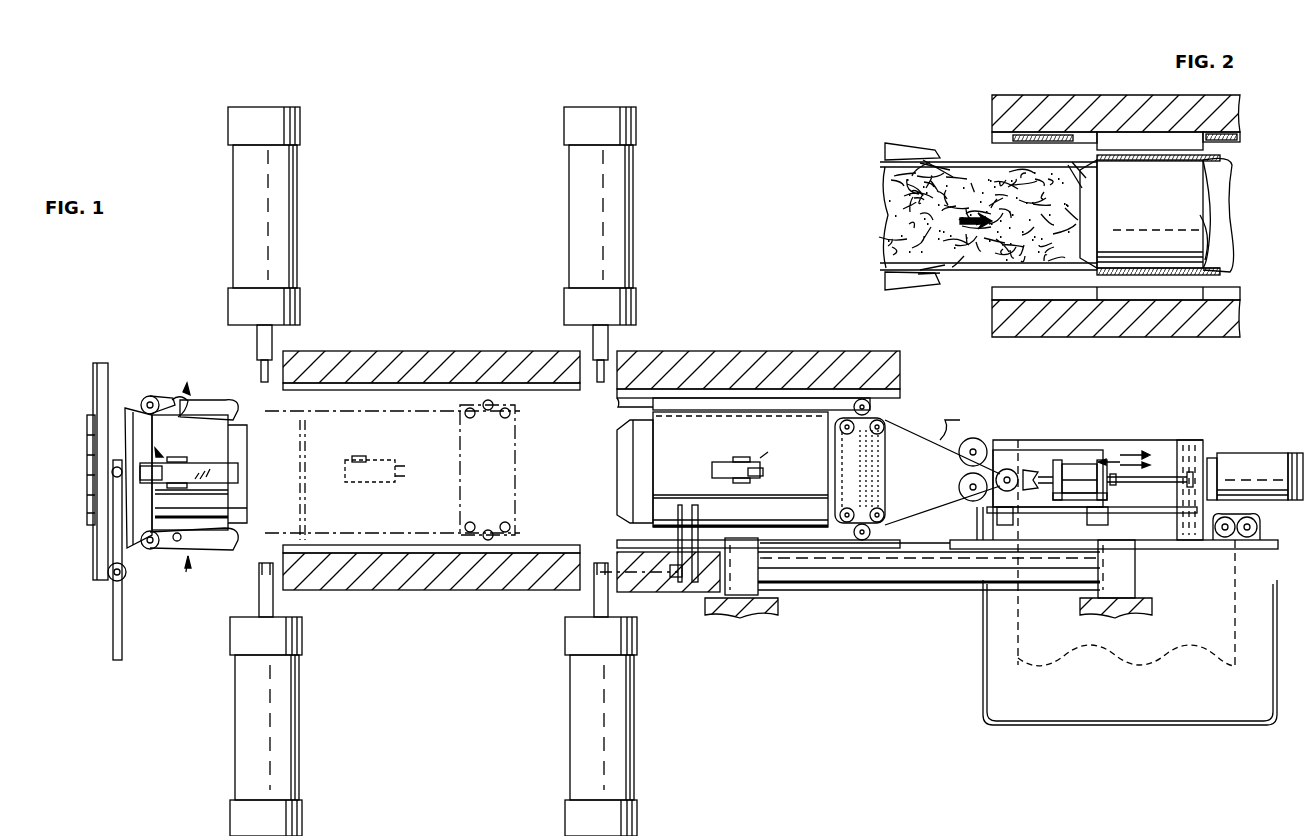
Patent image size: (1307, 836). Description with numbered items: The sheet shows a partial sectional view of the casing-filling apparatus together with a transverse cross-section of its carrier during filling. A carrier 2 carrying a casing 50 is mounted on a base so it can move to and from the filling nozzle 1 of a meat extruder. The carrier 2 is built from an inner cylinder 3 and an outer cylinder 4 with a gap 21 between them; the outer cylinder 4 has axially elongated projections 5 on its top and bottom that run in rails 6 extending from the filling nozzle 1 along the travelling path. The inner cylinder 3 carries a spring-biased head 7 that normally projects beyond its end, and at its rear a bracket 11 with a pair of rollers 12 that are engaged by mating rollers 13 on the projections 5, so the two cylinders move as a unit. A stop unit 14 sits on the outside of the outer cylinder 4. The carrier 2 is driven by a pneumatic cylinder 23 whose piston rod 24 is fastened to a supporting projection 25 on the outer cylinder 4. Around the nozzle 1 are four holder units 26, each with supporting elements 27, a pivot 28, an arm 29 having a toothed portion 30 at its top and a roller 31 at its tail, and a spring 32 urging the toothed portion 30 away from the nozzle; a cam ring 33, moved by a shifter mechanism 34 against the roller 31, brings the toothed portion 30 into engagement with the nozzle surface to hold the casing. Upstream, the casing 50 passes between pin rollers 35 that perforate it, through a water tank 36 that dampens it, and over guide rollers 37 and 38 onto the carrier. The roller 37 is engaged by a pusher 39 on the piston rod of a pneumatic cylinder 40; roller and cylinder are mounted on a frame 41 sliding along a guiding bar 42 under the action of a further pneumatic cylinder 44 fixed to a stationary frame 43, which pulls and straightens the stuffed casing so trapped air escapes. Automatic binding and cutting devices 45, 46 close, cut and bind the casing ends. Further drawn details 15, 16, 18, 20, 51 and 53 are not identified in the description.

In FIG. 1, the filling nozzle 1 is at (250, 490).
In FIG. 2, the filling nozzle 1 is at (895, 170).
In FIG. 1, the carrier 2 is at (245, 550).
In FIG. 2, the carrier 2 is at (1150, 214).
In FIG. 2, the inner cylinder 3 is at (1200, 207).
In FIG. 1, the outer cylinder 4 is at (822, 457).
In FIG. 2, the outer cylinder 4 is at (1240, 137).
In FIG. 1, the axially elongated projections 5 is at (775, 388).
In FIG. 2, the axially elongated projections 5 is at (1130, 138).
In FIG. 1, the rails 6 is at (448, 345).
In FIG. 2, the rails 6 is at (1027, 104).
In FIG. 1, the head 7 is at (625, 457).
In FIG. 2, the head 7 is at (1085, 180).
In FIG. 1, the bracket 11 is at (878, 462).
In FIG. 1, the rollers 12 is at (840, 427).
In FIG. 1, the mating rollers 13 is at (870, 408).
In FIG. 1, the stop unit 14 is at (758, 458).
In FIG. 1, the cap 15 is at (741, 457).
In FIG. 1, the clamp body 16 is at (720, 470).
In FIG. 1, the jaw 18 is at (765, 470).
In FIG. 1, the lower cap 20 is at (718, 478).
In FIG. 2, the gap 21 is at (1220, 276).
In FIG. 1, the pneumatic cylinder 23 is at (890, 565).
In FIG. 1, the piston rod 24 is at (700, 590).
In FIG. 1, the supporting projection 25 is at (682, 590).
In FIG. 1, the holder unit 26 is at (175, 466).
In FIG. 1, the supporting elements 27 is at (200, 404).
In FIG. 1, the pivot 28 is at (187, 442).
In FIG. 1, the arm 29 is at (225, 412).
In FIG. 2, the arm 29 is at (900, 147).
In FIG. 1, the toothed portion 30 is at (225, 425).
In FIG. 2, the toothed portion 30 is at (922, 160).
In FIG. 1, the roller 31 is at (150, 402).
In FIG. 1, the spring 32 is at (166, 396).
In FIG. 1, the cam ring 33 is at (133, 400).
In FIG. 1, the shifter mechanism 34 is at (122, 595).
In FIG. 1, the pin rollers 35 is at (1215, 537).
In FIG. 1, the water tank 36 is at (985, 630).
In FIG. 1, the roller 37 is at (1010, 470).
In FIG. 1, the rollers 38 is at (980, 445).
In FIG. 1, the pusher 39 is at (1040, 470).
In FIG. 1, the pneumatic cylinder 40 is at (1080, 478).
In FIG. 1, the frame 41 is at (1065, 455).
In FIG. 1, the guiding bar 42 is at (1145, 510).
In FIG. 1, the stationary frame 43 is at (1165, 448).
In FIG. 1, the pneumatic cylinder 44 is at (1250, 452).
In FIG. 1, the automatic binding and cutting device 45 is at (275, 265).
In FIG. 1, the automatic binding and cutting device 46 is at (612, 265).
In FIG. 1, the casing 50 is at (1260, 563).
In FIG. 2, the casing 50 is at (1232, 172).
In FIG. 1, the foil edge 51 is at (632, 405).
In FIG. 2, the foil edge 51 is at (925, 163).
In FIG. 2, the foil edge 53 is at (985, 252).